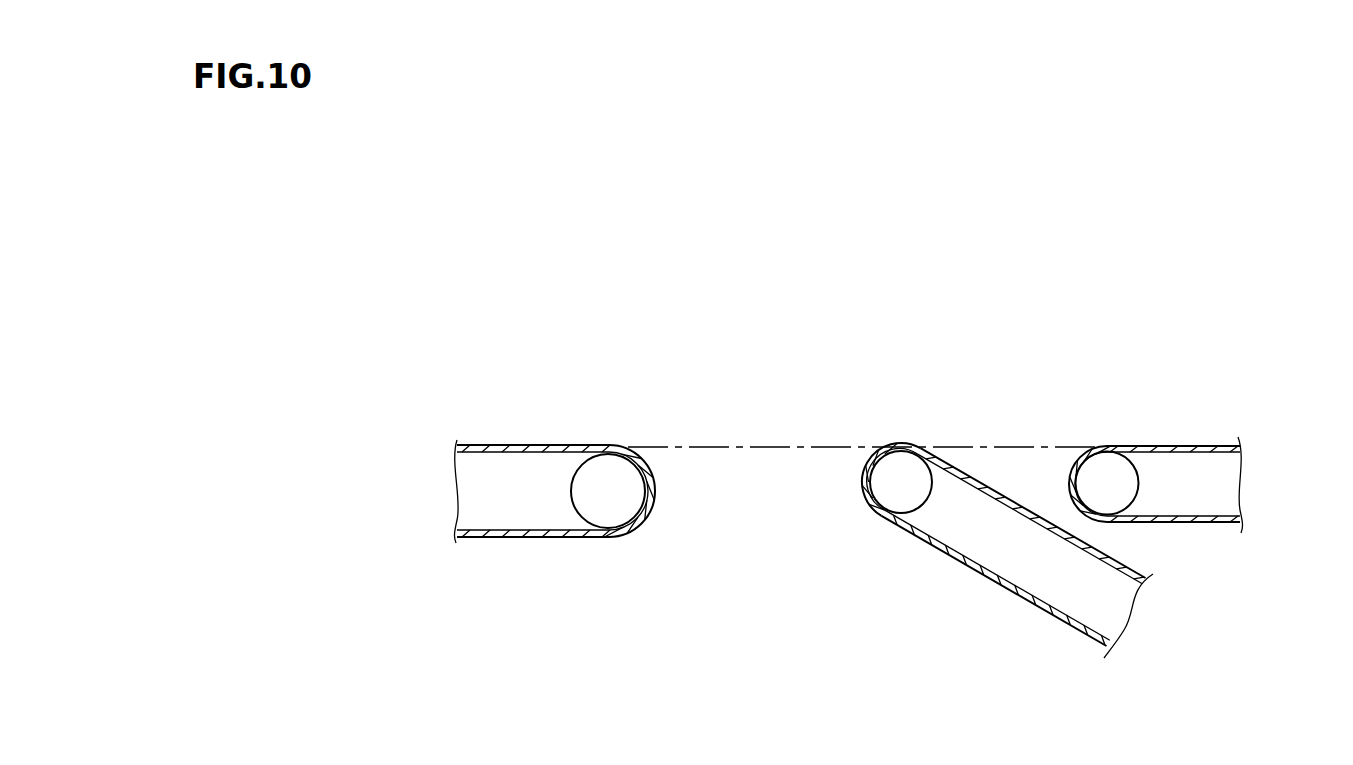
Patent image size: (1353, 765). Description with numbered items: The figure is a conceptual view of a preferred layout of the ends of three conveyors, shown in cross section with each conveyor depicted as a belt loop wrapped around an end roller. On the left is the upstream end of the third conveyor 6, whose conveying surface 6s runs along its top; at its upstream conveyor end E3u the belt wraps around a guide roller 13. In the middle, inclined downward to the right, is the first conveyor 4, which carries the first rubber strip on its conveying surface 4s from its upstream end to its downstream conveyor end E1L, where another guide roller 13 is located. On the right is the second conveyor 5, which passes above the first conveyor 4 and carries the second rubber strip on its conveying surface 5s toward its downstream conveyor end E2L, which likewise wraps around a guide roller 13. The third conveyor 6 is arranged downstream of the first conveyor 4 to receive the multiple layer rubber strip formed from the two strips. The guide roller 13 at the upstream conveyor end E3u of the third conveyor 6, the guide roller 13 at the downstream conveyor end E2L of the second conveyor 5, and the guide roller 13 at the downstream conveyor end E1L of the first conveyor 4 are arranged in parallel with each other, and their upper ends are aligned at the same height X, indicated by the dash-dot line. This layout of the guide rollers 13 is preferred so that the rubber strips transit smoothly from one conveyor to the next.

The first conveyor 4 is at (1007, 500).
The conveying surface 4s is at (985, 483).
The second conveyor 5 is at (1191, 428).
The conveying surface 5s is at (1202, 446).
The third conveyor 6 is at (558, 426).
The conveying surface 6s is at (553, 445).
The guide roller 13 is at (575, 509).
The downstream conveyor end E1L is at (902, 438).
The downstream conveyor end E2L is at (1104, 440).
The upstream conveyor end E3u is at (616, 436).
The height X is at (762, 445).